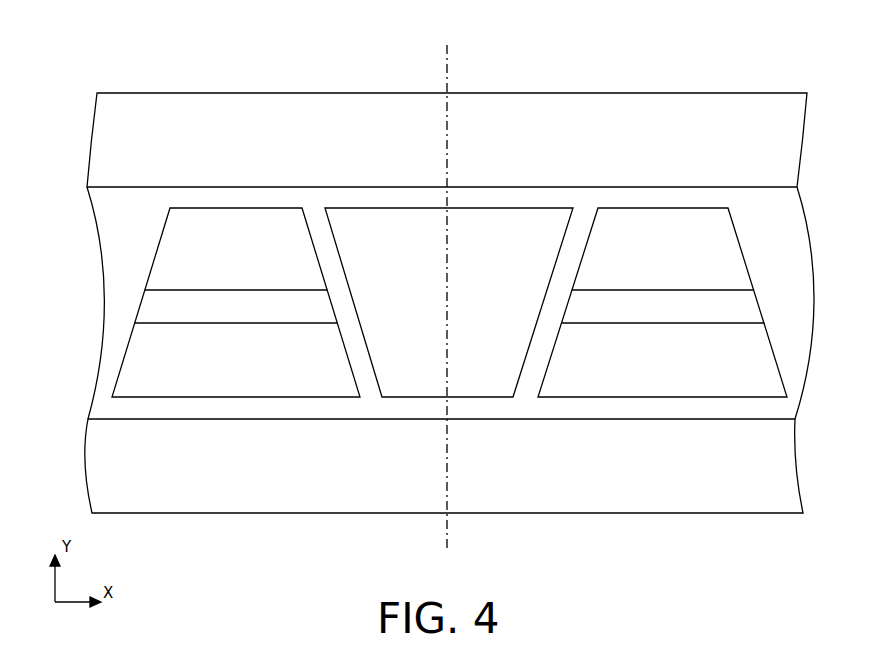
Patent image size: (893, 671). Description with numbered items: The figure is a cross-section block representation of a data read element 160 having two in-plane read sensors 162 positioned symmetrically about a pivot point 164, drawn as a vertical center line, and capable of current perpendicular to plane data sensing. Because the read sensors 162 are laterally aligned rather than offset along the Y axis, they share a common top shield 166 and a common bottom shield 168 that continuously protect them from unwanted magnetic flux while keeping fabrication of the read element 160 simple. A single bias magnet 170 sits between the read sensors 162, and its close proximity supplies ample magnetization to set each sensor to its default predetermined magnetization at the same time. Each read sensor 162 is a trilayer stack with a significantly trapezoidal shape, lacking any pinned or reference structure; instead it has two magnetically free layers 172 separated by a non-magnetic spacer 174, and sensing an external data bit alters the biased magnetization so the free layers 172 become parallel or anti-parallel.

The data read element 160 is at (441, 295).
The read sensor 162 is at (449, 299).
The pivot point 164 is at (427, 297).
The top shield 166 is at (447, 140).
The bottom shield 168 is at (444, 466).
The bias magnet 170 is at (449, 302).
The free layer 172 is at (152, 266).
The spacer 174 is at (138, 313).